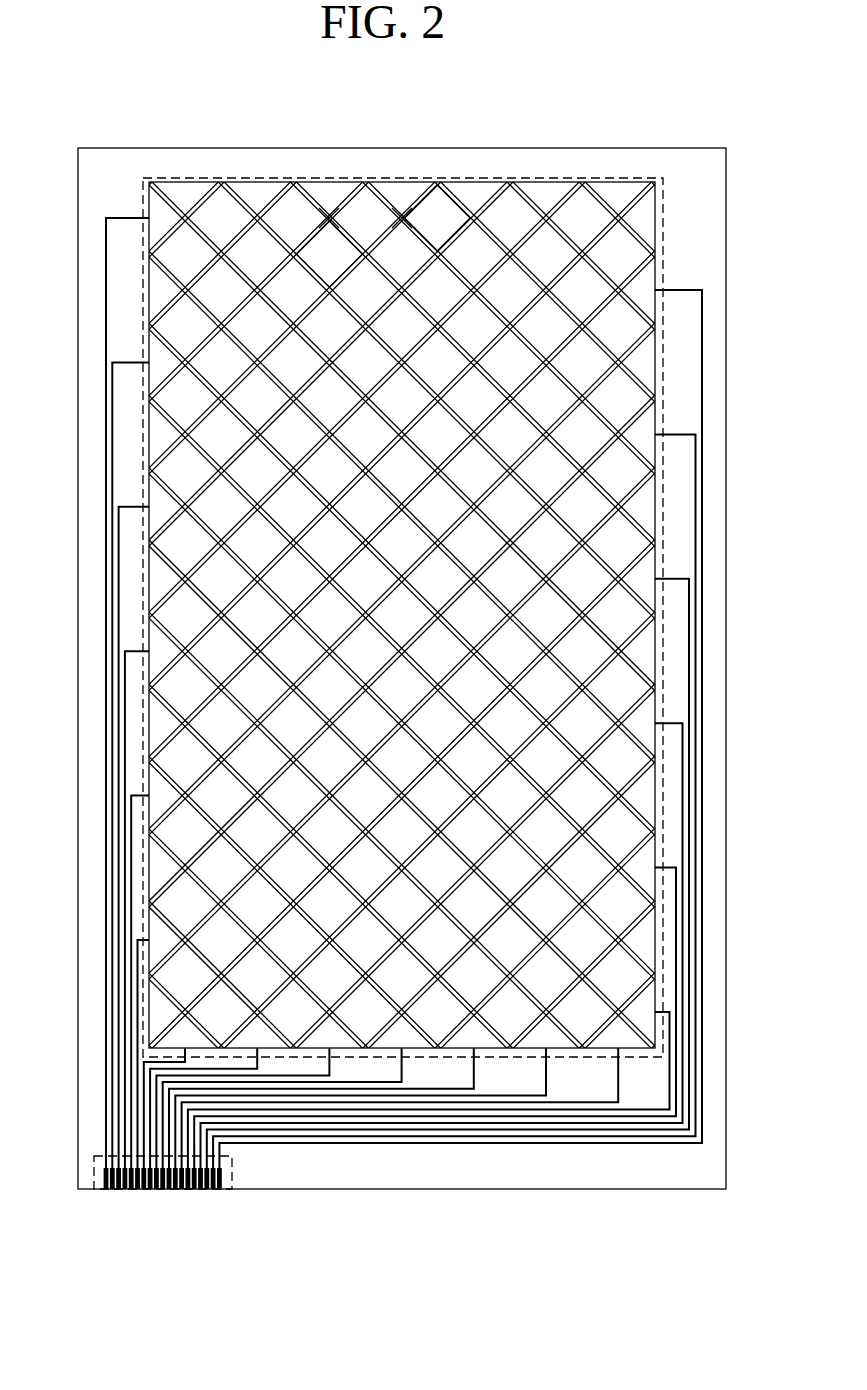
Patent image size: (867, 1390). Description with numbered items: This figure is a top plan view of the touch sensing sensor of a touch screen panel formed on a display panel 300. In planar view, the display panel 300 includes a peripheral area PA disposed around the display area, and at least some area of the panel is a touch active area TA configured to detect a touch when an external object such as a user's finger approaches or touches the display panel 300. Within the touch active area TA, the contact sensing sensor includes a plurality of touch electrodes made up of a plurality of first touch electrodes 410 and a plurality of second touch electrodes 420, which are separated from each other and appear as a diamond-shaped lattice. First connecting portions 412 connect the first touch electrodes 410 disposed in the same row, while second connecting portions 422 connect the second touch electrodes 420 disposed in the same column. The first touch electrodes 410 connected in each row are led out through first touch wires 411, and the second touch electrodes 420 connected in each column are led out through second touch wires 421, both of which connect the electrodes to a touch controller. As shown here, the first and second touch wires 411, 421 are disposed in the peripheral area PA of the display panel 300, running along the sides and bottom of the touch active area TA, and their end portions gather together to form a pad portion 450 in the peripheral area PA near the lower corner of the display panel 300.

The display panel 300 is at (539, 148).
The touch active area TA is at (631, 178).
The peripheral area PA is at (98, 187).
The first touch electrodes 410 is at (447, 218).
The first connecting portions 412 is at (405, 217).
The second touch electrodes 420 is at (338, 248).
The second connecting portions 422 is at (328, 220).
The first touch wires 411 is at (104, 275).
The second touch wires 421 is at (476, 1070).
The pad portion 450 is at (232, 1172).